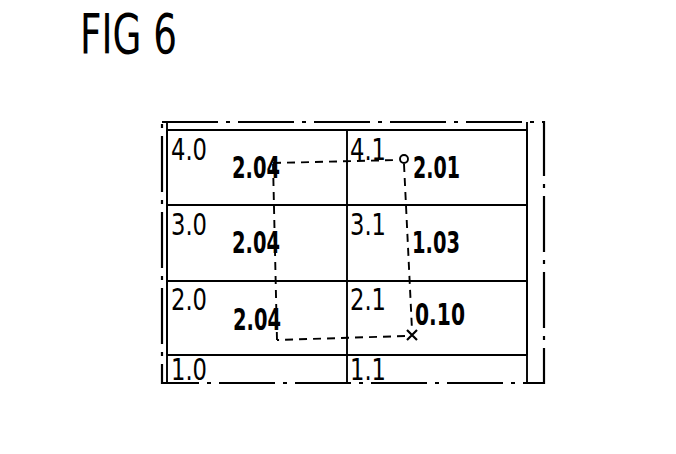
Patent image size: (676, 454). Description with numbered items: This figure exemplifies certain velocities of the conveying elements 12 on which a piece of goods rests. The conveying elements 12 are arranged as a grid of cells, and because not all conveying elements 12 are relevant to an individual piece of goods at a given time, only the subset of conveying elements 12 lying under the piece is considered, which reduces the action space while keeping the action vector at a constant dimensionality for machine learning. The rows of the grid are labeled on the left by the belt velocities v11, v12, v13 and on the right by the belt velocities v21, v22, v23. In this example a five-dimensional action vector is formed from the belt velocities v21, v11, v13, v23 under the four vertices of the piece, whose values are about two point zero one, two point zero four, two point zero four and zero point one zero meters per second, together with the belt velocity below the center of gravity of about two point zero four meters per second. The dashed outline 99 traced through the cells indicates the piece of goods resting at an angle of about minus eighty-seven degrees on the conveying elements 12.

The conveying element 12 is at (260, 139).
The belt velocity v11 is at (166, 163).
The belt velocity v12 is at (166, 240).
The belt velocity v13 is at (166, 316).
The belt velocity v21 is at (527, 164).
The belt velocity v22 is at (527, 241).
The belt velocity v23 is at (527, 317).
The trajectory angle 99 is at (338, 342).